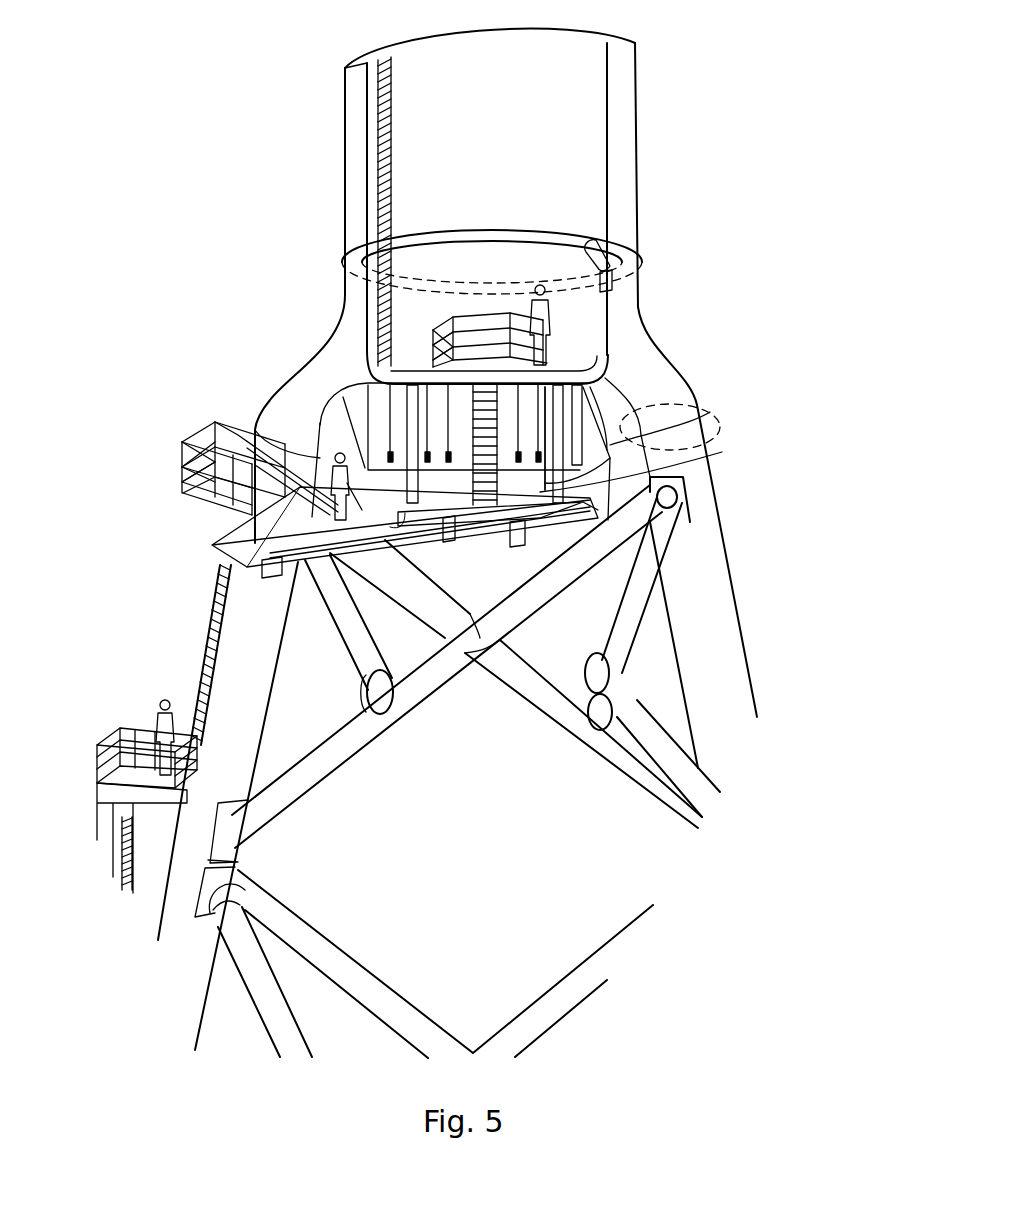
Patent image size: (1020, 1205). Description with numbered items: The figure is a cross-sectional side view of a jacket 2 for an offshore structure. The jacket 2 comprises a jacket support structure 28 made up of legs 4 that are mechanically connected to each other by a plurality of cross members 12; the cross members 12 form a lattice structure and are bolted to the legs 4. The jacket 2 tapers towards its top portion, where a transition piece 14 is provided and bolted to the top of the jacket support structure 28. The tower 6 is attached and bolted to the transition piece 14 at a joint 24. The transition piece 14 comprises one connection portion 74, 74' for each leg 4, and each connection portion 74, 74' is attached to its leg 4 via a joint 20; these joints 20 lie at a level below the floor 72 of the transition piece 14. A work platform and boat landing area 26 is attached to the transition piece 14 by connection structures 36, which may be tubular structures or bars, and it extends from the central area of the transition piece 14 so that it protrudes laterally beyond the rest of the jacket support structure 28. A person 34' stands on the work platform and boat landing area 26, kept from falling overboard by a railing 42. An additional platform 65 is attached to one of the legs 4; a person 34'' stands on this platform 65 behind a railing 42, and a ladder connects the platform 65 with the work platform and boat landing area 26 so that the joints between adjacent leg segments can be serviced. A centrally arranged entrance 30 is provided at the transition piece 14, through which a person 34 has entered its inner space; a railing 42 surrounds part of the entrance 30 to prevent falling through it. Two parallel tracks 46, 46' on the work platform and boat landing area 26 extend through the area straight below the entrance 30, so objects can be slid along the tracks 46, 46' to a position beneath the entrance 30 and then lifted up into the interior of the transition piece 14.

The jacket 2 is at (200, 306).
The legs 4 is at (725, 548).
The tower 6 is at (345, 158).
The cross members 12 is at (690, 640).
The transition piece 14 is at (642, 315).
The joint 20 is at (722, 410).
The joint 24 is at (345, 283).
The work platform and boat landing area 26 is at (380, 570).
The jacket support structure 28 is at (176, 538).
The entrance 30 is at (462, 400).
The person 34 is at (553, 264).
The person 34' is at (319, 451).
The person 34'' is at (146, 703).
The connection structures 36 is at (700, 452).
The railing 42 is at (482, 315).
The track 46 is at (493, 546).
The track 46' is at (292, 595).
The platform 65 is at (145, 800).
The floor 72 is at (413, 370).
The connection portion 74 is at (653, 421).
The connection portion 74' is at (265, 432).